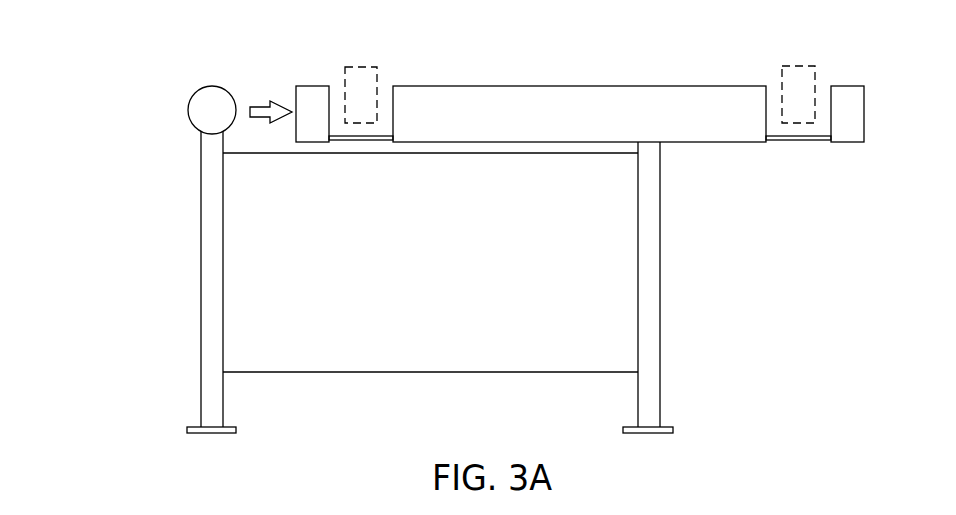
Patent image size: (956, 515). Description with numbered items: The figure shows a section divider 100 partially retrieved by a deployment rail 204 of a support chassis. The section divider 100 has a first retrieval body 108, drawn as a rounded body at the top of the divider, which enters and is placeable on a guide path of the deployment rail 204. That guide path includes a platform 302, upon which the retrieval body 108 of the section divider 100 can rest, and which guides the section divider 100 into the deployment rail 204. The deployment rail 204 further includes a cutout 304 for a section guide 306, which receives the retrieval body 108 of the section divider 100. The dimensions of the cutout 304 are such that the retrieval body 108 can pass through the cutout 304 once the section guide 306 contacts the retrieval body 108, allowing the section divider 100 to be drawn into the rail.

The section divider 100 is at (146, 191).
The first retrieval body 108 is at (202, 89).
The deployment rail 204 is at (610, 86).
The platform 302 is at (382, 135).
The cutout 304 is at (335, 70).
The section guide 306 is at (365, 67).